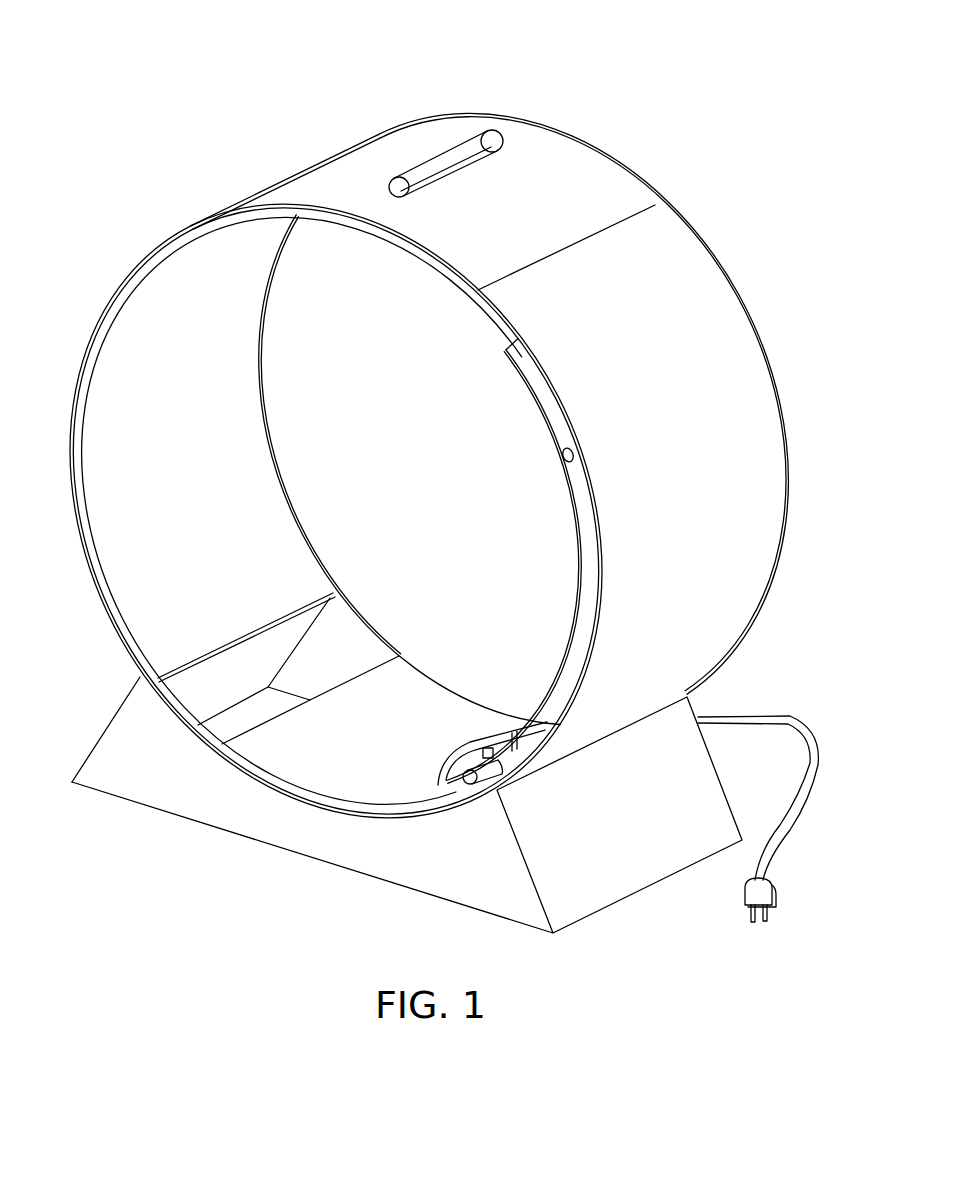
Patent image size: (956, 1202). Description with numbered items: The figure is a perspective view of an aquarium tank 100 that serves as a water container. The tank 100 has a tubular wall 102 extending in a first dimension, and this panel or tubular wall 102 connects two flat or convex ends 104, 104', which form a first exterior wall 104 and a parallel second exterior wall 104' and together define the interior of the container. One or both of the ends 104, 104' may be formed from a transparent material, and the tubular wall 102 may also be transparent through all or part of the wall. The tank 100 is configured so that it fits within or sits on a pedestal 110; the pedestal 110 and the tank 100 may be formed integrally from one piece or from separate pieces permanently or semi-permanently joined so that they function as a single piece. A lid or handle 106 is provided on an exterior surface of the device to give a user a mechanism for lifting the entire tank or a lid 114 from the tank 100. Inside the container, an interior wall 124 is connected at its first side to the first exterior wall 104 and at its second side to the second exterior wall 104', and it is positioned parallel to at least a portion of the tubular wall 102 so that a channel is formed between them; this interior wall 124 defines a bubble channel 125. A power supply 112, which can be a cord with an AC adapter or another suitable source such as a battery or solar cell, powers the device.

The tank 100 is at (562, 56).
The tubular wall 102 is at (703, 268).
The end 104 is at (409, 438).
The end 104' is at (352, 510).
The handle 106 is at (475, 143).
The pedestal 110 is at (705, 783).
The power supply 112 is at (787, 722).
The lid 114 is at (592, 173).
The interior wall 124 is at (575, 502).
The bubble channel 125 is at (576, 450).